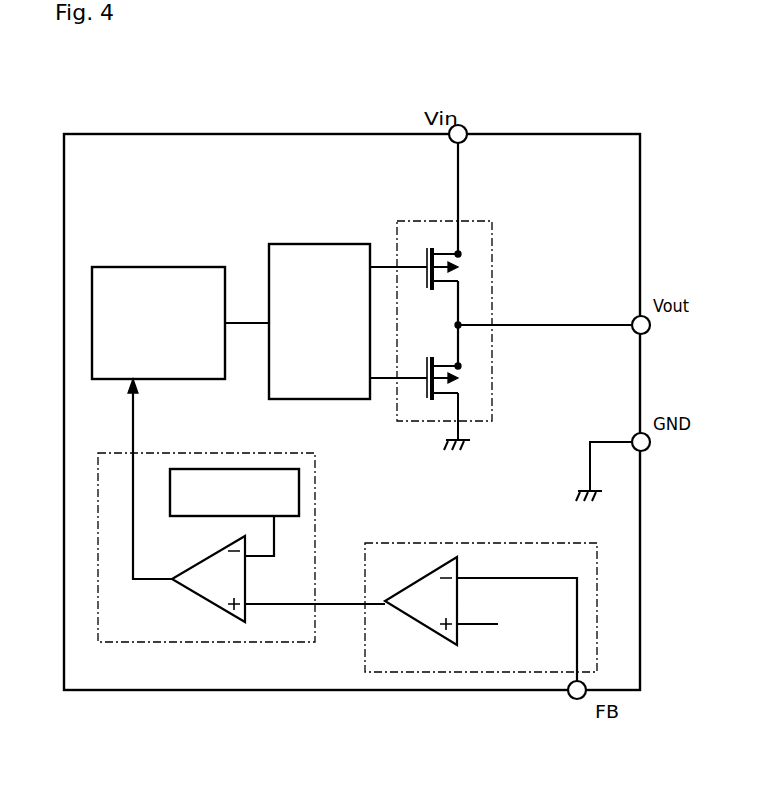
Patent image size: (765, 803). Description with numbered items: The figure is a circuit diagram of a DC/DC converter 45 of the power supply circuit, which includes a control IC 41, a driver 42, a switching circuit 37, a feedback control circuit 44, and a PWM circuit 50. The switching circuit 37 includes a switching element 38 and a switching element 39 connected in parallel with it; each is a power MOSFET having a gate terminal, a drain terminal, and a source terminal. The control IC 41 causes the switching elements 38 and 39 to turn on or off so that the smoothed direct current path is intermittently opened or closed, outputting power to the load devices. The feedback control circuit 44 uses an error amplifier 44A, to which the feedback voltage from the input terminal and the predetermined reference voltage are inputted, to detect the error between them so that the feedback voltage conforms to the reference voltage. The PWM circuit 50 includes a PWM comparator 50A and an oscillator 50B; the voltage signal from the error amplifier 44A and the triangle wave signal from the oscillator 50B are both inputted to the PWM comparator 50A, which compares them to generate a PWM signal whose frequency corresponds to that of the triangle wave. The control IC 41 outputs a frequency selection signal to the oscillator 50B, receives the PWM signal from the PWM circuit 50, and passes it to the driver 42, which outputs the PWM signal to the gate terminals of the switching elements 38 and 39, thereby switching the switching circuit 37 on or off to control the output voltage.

The switching circuit 37 is at (492, 250).
The switching element 38 is at (430, 247).
The switching element 39 is at (430, 403).
The control IC 41 is at (190, 267).
The driver 42 is at (322, 244).
The feedback control circuit 44 is at (443, 672).
The error amplifier 44A is at (413, 622).
The DC/DC converter 45 is at (155, 708).
The PWM circuit 50 is at (225, 453).
The PWM comparator 50A is at (200, 597).
The oscillator 50B is at (268, 469).